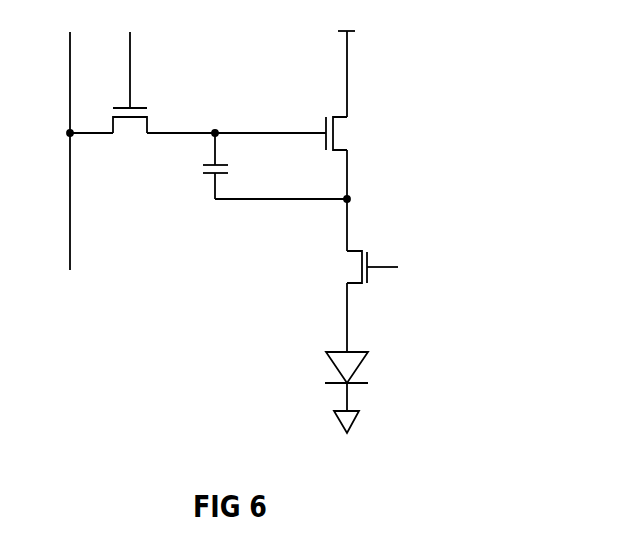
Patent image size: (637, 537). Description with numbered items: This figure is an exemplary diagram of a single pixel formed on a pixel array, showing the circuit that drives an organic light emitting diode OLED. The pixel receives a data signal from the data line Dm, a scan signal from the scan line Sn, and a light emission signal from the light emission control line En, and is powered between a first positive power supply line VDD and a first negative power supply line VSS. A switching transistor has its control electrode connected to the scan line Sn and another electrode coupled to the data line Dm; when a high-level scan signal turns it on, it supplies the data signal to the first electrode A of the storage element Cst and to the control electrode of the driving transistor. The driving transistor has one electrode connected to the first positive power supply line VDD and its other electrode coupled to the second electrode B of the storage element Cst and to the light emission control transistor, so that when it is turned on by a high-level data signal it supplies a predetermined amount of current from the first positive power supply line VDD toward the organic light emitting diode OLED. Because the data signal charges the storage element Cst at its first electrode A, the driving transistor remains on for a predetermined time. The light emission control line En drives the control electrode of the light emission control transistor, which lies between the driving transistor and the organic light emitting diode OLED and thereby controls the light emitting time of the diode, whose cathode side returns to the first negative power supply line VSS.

The data line Dm is at (55, 151).
The scan line Sn is at (136, 59).
The first electrode of the storage element A is at (267, 121).
The storage element Cst is at (199, 166).
The second electrode of the storage element B is at (279, 211).
The first positive power supply line VDD is at (346, 63).
The light emission control line En is at (400, 268).
The organic light emitting diode OLED is at (319, 381).
The first negative power supply line VSS is at (346, 438).